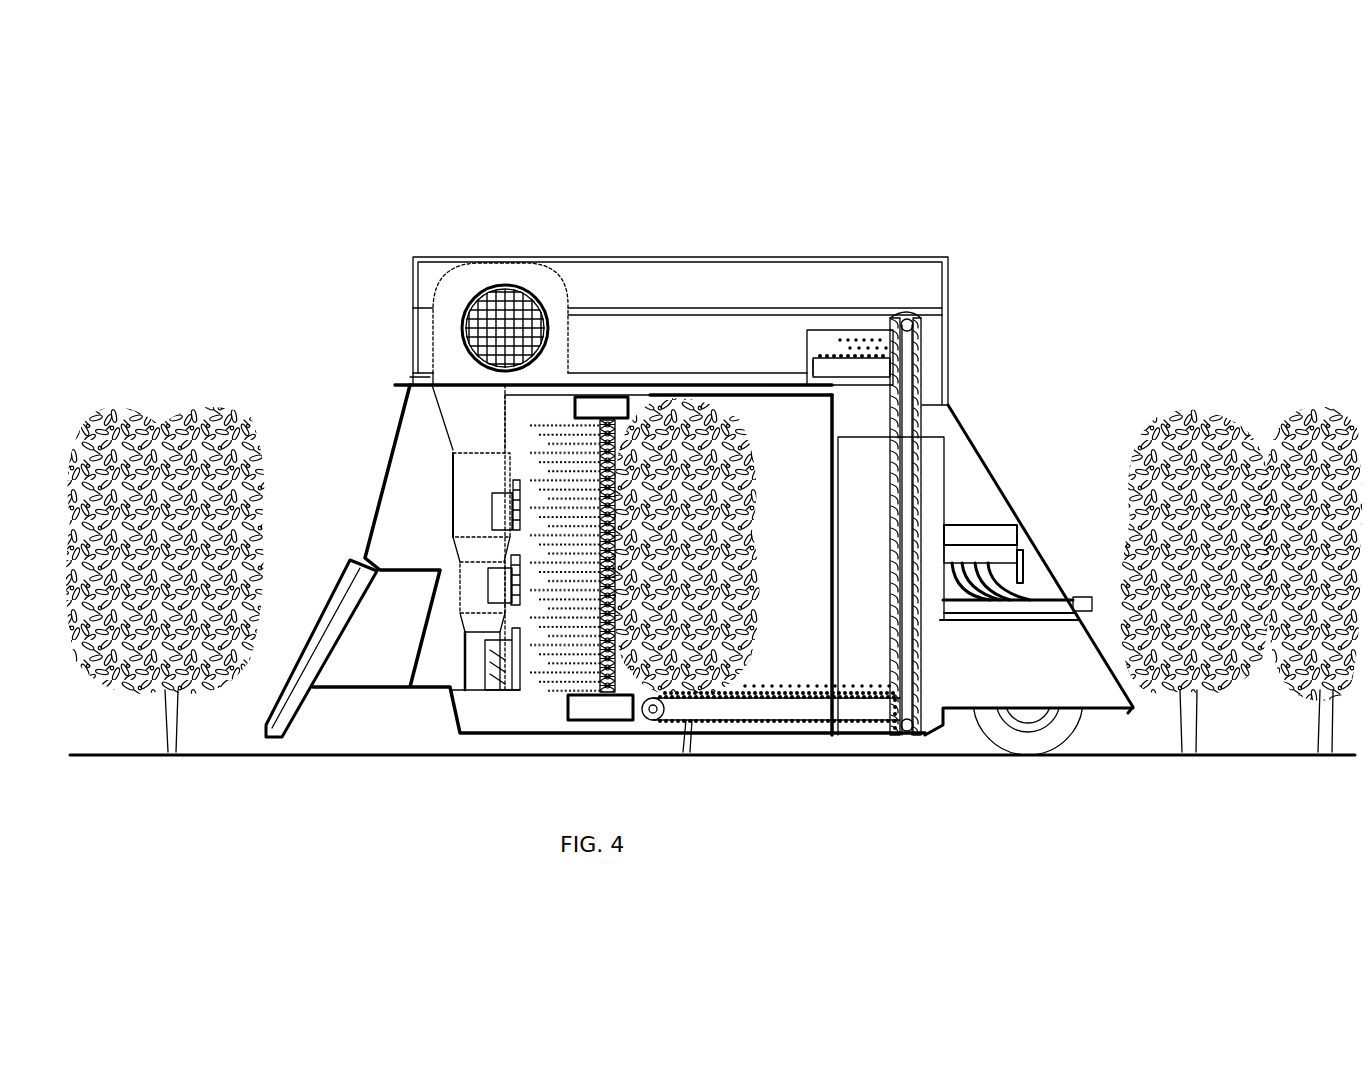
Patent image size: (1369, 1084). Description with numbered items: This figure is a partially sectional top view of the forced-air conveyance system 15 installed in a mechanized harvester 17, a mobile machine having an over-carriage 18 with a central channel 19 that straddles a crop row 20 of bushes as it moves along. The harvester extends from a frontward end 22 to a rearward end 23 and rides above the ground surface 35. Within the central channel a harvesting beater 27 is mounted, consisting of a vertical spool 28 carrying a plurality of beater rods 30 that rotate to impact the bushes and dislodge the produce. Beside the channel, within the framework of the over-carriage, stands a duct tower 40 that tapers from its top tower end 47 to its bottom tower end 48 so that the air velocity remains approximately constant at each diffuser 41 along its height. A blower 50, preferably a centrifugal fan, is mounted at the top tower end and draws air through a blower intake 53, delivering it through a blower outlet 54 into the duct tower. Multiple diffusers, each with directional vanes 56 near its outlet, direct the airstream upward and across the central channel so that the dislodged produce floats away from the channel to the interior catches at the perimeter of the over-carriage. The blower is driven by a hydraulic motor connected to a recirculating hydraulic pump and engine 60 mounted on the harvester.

The forced-air conveyance system 15 is at (320, 286).
The mechanized harvester 17 is at (780, 241).
The over-carriage 18 is at (945, 426).
The central channel 19 is at (595, 561).
The crop row 20 is at (714, 541).
The frontward end 22 is at (333, 668).
The rearward end 23 is at (1097, 697).
The harvesting beater 27 is at (575, 428).
The vertical spool 28 is at (615, 692).
The beater rods 30 is at (548, 692).
The ground surface 35 is at (365, 752).
The duct tower 40 is at (465, 515).
The diffuser 41 is at (490, 672).
The top tower end 47 is at (470, 394).
The bottom tower end 48 is at (472, 680).
The blower 50 is at (452, 320).
The blower intake 53 is at (505, 300).
The blower outlet 54 is at (418, 390).
The directional vanes 56 is at (462, 573).
The recirculating hydraulic pump and engine 60 is at (990, 537).